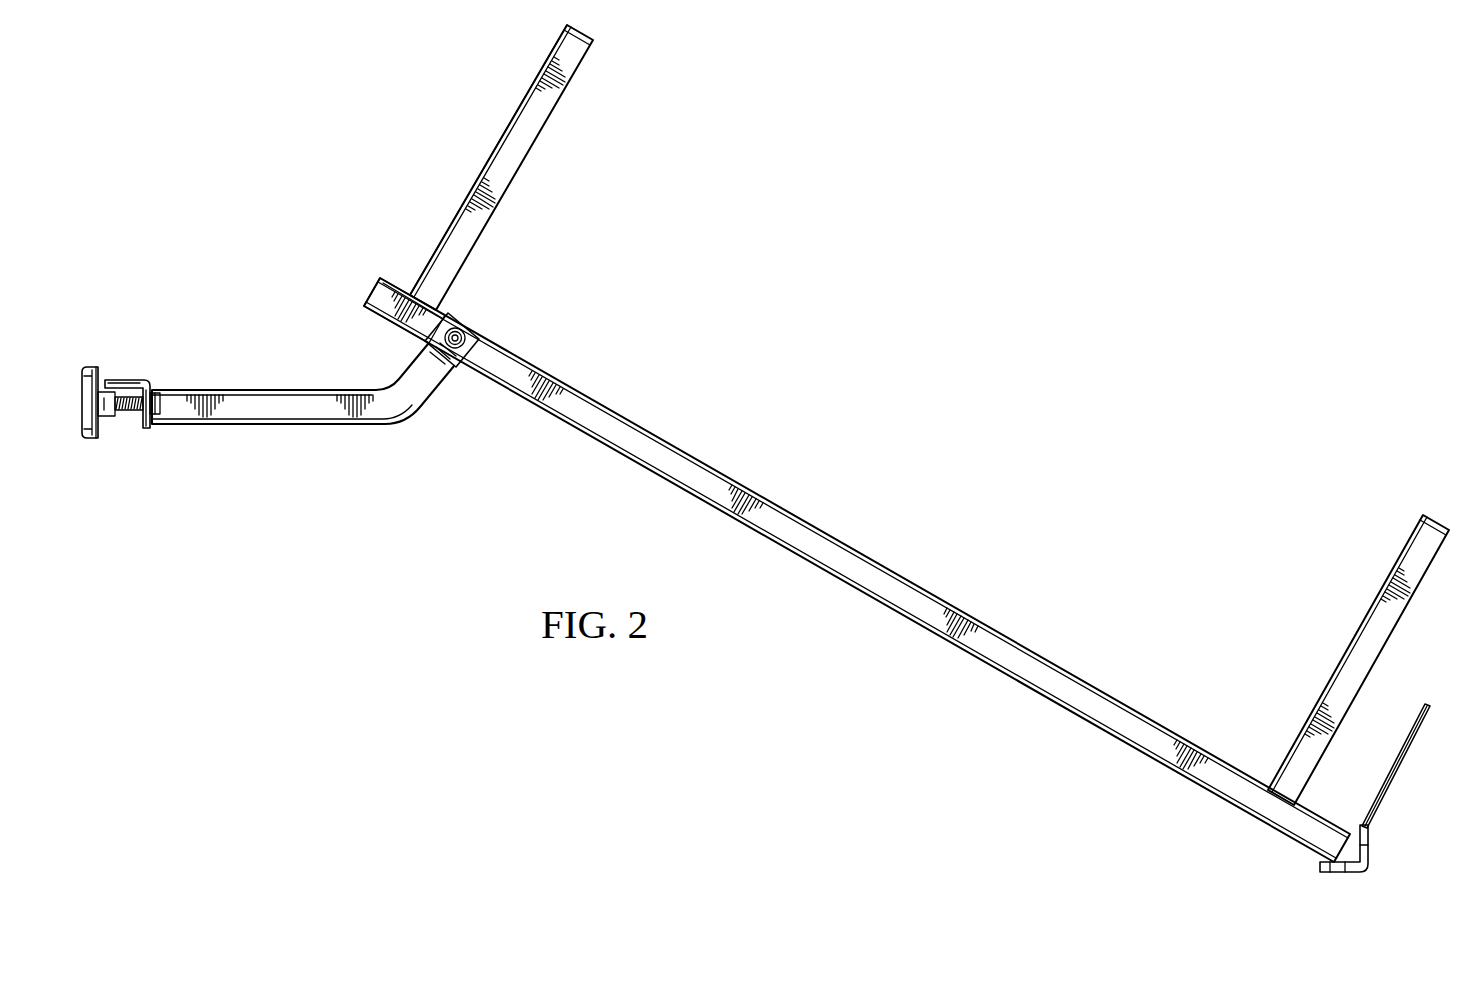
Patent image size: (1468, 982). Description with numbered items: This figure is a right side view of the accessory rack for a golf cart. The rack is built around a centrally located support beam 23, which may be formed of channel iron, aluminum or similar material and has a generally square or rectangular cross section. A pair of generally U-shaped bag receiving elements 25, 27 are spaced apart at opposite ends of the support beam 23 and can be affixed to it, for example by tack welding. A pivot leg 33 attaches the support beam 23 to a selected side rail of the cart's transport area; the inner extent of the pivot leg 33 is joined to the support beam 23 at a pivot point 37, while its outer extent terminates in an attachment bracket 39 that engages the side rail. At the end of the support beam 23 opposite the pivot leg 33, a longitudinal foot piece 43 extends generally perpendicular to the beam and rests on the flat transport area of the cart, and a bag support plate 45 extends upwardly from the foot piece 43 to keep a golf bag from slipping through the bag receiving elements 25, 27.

The support beam 23 is at (896, 572).
The bag receiving element 25 is at (504, 132).
The bag receiving element 27 is at (1362, 623).
The pivot leg 33 is at (216, 320).
The pivot point 37 is at (464, 332).
The attachment bracket 39 is at (136, 379).
The foot piece 43 is at (1372, 856).
The bag support plate 45 is at (1396, 770).